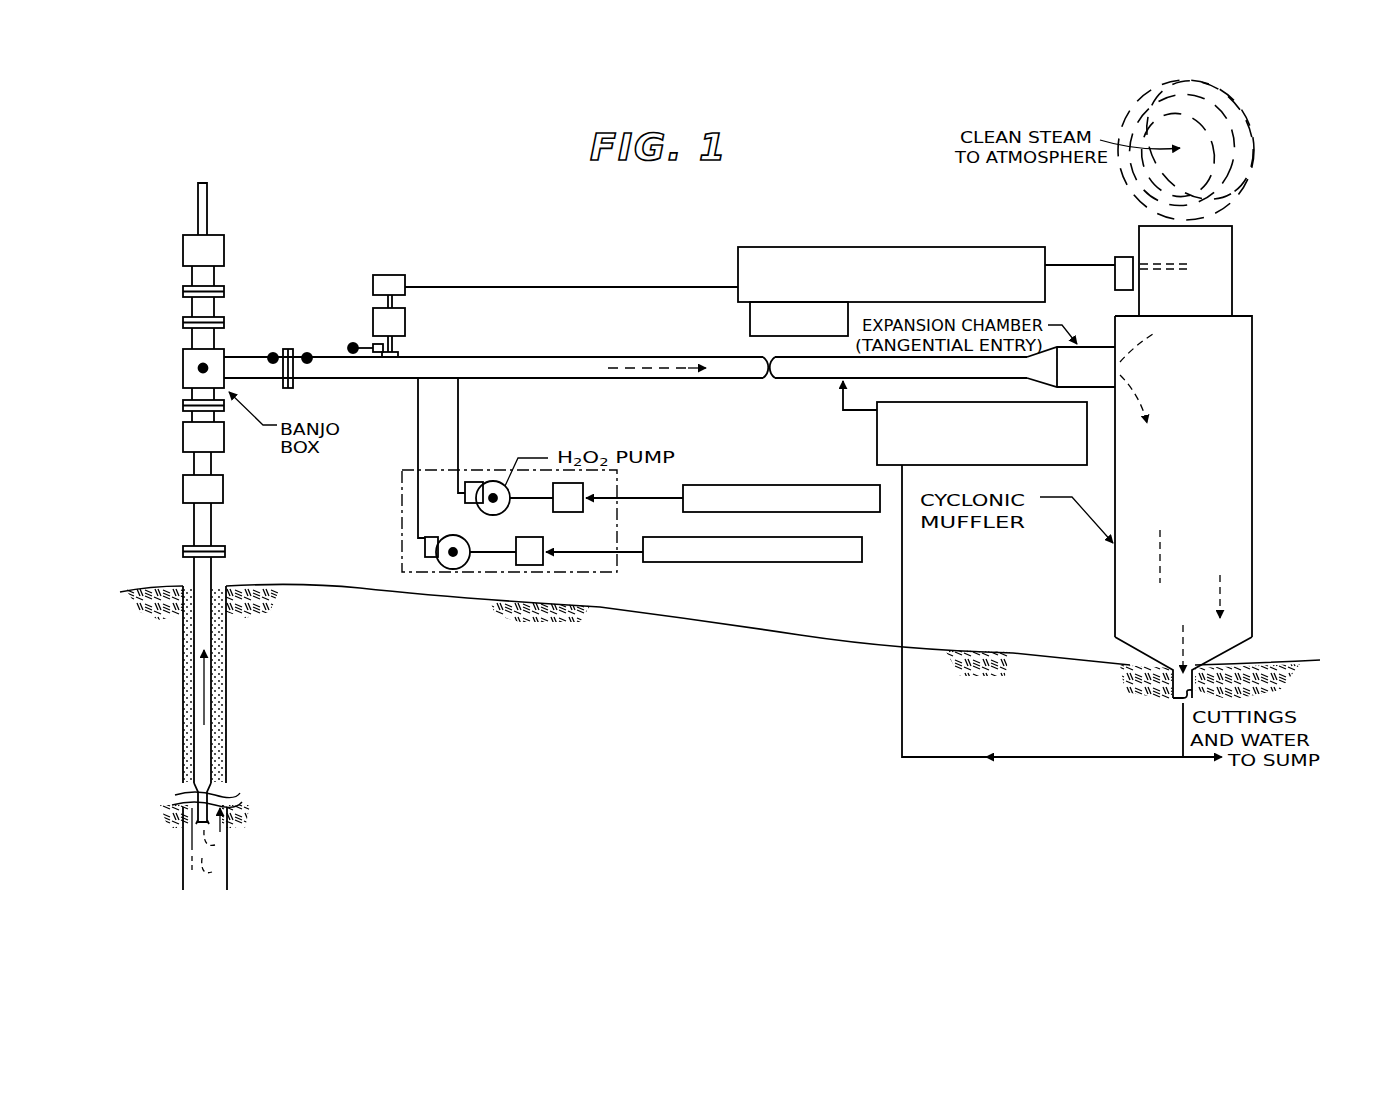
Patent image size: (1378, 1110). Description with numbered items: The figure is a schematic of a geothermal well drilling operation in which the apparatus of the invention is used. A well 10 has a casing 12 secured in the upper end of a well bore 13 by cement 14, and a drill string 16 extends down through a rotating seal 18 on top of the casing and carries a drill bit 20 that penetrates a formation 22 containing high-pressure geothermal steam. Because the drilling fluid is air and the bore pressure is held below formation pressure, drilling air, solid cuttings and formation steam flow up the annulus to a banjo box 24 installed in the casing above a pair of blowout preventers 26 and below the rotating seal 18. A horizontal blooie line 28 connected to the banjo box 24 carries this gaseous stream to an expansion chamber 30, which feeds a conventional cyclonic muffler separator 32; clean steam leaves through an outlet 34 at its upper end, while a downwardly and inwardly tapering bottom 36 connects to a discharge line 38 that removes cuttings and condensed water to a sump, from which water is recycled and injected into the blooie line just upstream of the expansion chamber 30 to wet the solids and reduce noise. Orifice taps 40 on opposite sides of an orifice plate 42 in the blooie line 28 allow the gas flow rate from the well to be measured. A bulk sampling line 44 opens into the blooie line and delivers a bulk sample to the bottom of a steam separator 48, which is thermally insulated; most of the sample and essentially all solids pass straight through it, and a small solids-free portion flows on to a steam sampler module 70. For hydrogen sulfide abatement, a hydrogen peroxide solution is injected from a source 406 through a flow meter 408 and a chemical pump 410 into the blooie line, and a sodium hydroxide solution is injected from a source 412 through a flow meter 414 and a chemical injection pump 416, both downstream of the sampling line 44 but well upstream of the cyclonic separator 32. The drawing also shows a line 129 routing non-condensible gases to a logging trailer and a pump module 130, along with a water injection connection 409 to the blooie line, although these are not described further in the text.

The well 10 is at (181, 636).
The casing 12 is at (213, 575).
The well bore 13 is at (183, 672).
The cement 14 is at (226, 640).
The drill string 16 is at (198, 210).
The rotating seal 18 is at (183, 255).
The drill bit 20 is at (212, 824).
The formation 22 is at (149, 871).
The banjo box 24 is at (183, 370).
The blowout preventers 26 is at (224, 440).
The blooie line 28 is at (256, 357).
The expansion chamber 30 is at (1101, 347).
The cyclonic muffler separator 32 is at (1252, 407).
The outlet 34 is at (1232, 252).
The tapering bottom 36 is at (1161, 652).
The discharge line 38 is at (1170, 698).
The orifice taps 40 is at (307, 353).
The orifice plate 42 is at (293, 376).
The bulk sampling line 44 is at (396, 352).
The steam separator 48 is at (399, 324).
The steam sampler module 70 is at (389, 285).
The non-condensible gases line to R.F. Smith logging trailer 129 is at (738, 262).
The pump module 130 is at (750, 322).
The hydrogen peroxide source 406 is at (845, 485).
The flow meter 408 is at (583, 489).
The water injection line 409 is at (843, 403).
The chemical pump 410 is at (494, 515).
The sodium hydroxide source 412 is at (825, 562).
The flow meter 414 is at (543, 564).
The chemical injection pump 416 is at (461, 535).